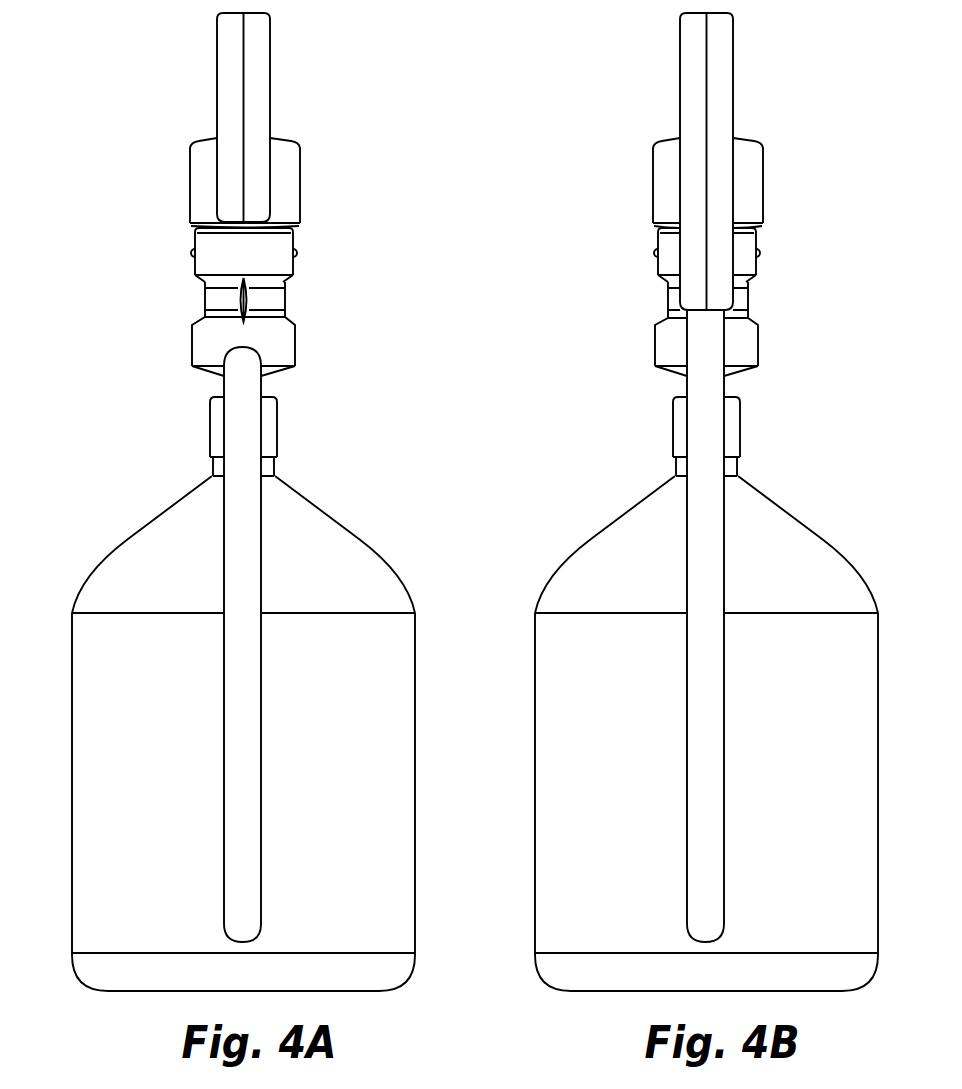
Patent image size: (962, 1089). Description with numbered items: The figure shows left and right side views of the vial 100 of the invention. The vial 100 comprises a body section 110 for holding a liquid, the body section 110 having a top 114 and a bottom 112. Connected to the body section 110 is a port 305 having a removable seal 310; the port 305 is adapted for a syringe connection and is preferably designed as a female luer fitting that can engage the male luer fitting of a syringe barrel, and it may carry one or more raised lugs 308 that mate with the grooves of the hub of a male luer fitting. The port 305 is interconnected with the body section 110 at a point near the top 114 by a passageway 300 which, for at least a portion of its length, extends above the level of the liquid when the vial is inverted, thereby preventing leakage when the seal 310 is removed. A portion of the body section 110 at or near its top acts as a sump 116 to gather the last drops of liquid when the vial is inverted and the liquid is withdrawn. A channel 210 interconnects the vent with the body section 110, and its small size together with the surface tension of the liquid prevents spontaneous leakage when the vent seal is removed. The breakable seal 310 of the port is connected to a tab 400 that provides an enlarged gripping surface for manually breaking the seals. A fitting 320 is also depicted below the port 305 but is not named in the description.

In FIG. 4A, the vial 100 is at (132, 505).
In FIG. 4B, the vial 100 is at (825, 505).
In FIG. 4A, the body section 110 is at (415, 797).
In FIG. 4B, the body section 110 is at (535, 705).
In FIG. 4A, the bottom 112 is at (533, 978).
In FIG. 4A, the top 114 is at (296, 487).
In FIG. 4B, the top 114 is at (648, 487).
In FIG. 4A, the sump 116 is at (278, 425).
In FIG. 4B, the sump 116 is at (675, 425).
In FIG. 4B, the channel 210 is at (725, 724).
In FIG. 4A, the passageway 300 is at (223, 735).
In FIG. 4A, the port 305 is at (298, 270).
In FIG. 4B, the port 305 is at (659, 270).
In FIG. 4A, the raised lugs 308 is at (191, 254).
In FIG. 4B, the raised lugs 308 is at (761, 254).
In FIG. 4A, the removable seal 310 is at (296, 227).
In FIG. 4B, the removable seal 310 is at (657, 227).
In FIG. 4A, the lower nut 320 is at (243, 346).
In FIG. 4B, the lower nut 320 is at (706, 347).
In FIG. 4A, the tab 400 is at (272, 70).
In FIG. 4B, the tab 400 is at (681, 70).